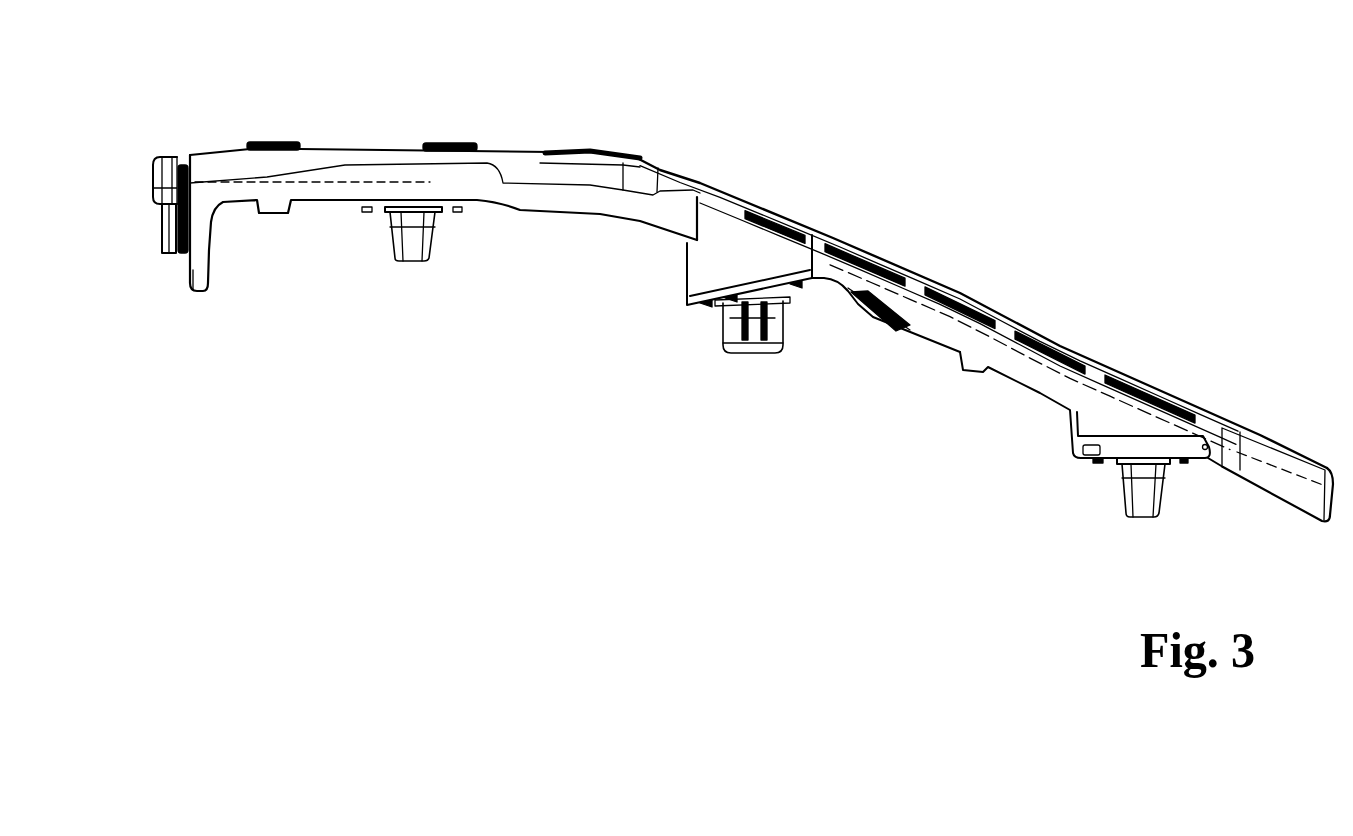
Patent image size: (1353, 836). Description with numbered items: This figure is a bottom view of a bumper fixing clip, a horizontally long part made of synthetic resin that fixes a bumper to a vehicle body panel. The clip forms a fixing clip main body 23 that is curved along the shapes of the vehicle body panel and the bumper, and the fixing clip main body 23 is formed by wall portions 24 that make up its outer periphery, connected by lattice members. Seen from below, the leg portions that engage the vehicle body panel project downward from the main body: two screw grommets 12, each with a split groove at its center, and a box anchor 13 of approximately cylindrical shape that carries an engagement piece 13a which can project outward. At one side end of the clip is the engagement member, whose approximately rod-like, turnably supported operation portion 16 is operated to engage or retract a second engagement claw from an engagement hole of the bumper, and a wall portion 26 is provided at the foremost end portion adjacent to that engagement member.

The screw grommet 12 is at (412, 252).
The box anchor 13 is at (772, 340).
The engagement piece 13a is at (753, 320).
The operation portion 16 is at (168, 236).
The fixing clip main body 23 is at (532, 152).
The wall portion 24 is at (1025, 368).
The wall portion 26 is at (162, 173).